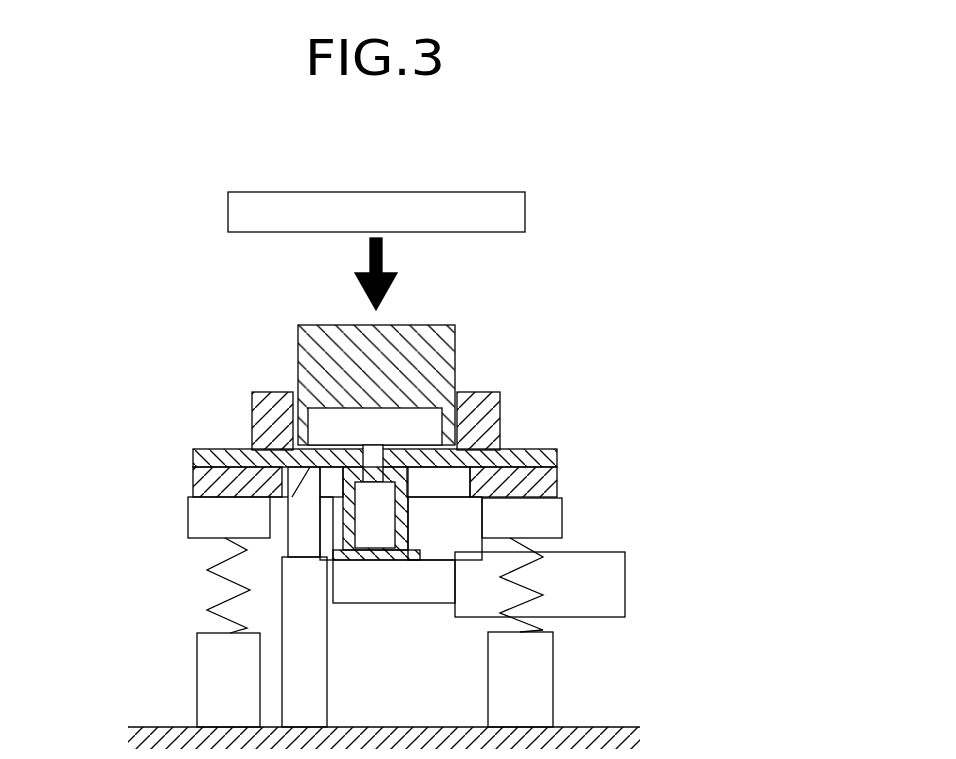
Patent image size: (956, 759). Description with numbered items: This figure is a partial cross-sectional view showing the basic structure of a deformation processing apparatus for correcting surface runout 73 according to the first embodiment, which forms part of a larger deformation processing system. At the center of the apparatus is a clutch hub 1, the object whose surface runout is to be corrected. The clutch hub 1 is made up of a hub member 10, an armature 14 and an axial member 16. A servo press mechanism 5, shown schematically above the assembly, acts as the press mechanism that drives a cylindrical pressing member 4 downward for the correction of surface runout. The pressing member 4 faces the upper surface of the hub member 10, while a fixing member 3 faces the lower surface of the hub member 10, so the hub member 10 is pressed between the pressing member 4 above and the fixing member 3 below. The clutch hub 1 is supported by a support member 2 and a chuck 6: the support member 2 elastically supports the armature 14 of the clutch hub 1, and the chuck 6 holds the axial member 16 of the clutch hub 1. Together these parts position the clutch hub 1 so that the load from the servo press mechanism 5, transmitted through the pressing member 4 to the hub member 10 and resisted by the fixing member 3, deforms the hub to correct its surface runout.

The deformation processing apparatus for correcting surface runout 73 is at (128, 276).
The servo press mechanism 5 is at (527, 212).
The cylindrical pressing member 4 is at (298, 338).
The clutch hub 1 is at (223, 418).
The hub member 10 is at (500, 422).
The armature 14 is at (193, 477).
The axial member 16 is at (370, 517).
The support member 2 is at (562, 518).
The fixing member 3 is at (297, 656).
The chuck 6 is at (598, 618).